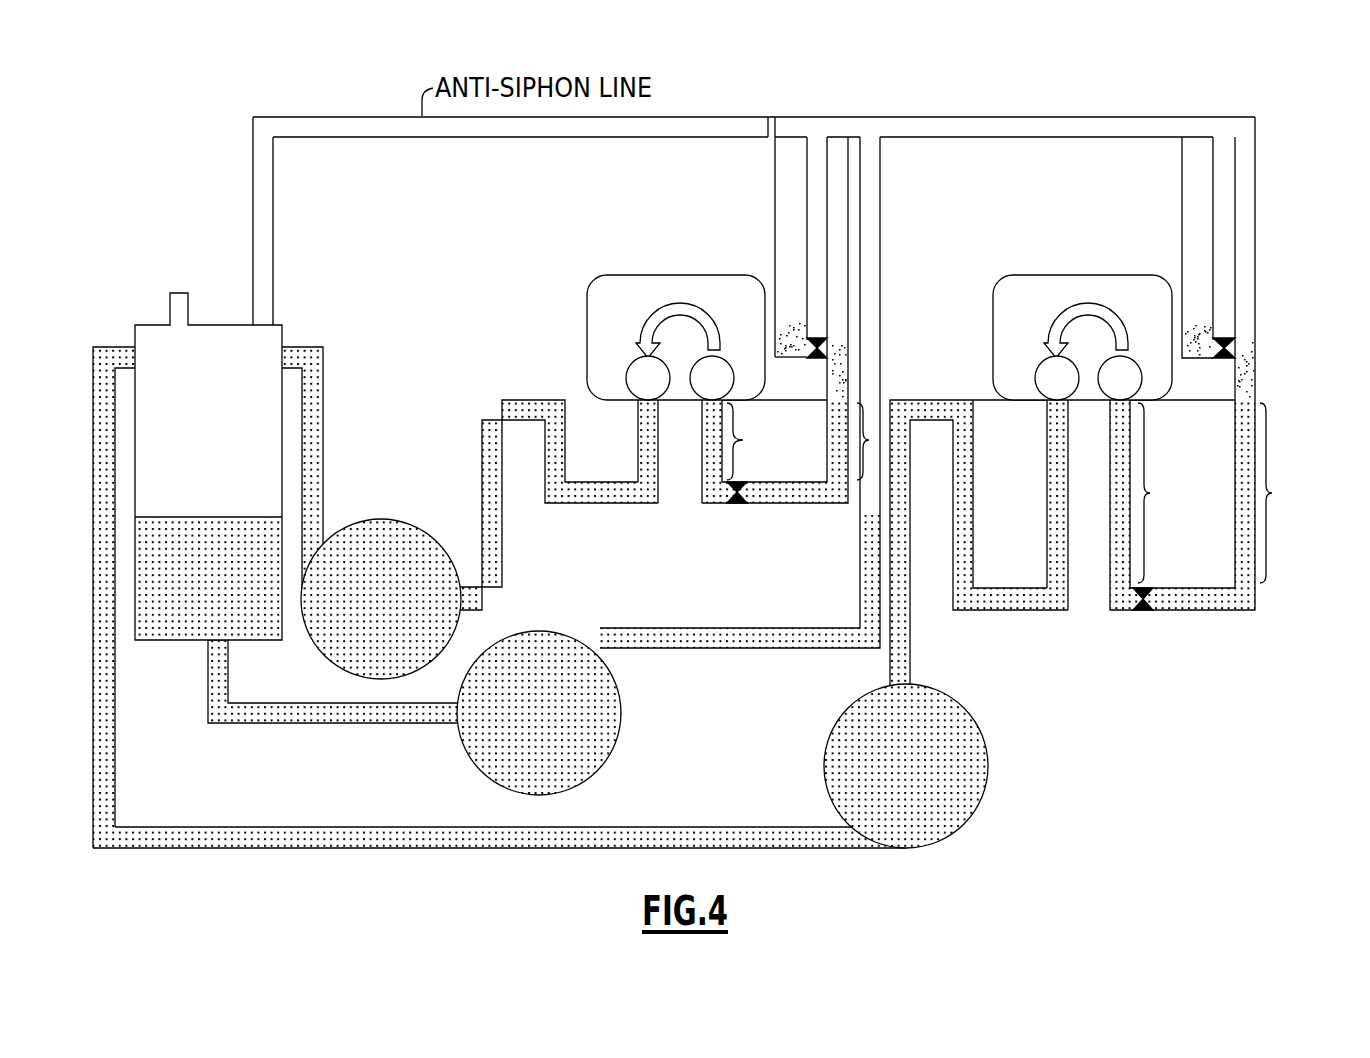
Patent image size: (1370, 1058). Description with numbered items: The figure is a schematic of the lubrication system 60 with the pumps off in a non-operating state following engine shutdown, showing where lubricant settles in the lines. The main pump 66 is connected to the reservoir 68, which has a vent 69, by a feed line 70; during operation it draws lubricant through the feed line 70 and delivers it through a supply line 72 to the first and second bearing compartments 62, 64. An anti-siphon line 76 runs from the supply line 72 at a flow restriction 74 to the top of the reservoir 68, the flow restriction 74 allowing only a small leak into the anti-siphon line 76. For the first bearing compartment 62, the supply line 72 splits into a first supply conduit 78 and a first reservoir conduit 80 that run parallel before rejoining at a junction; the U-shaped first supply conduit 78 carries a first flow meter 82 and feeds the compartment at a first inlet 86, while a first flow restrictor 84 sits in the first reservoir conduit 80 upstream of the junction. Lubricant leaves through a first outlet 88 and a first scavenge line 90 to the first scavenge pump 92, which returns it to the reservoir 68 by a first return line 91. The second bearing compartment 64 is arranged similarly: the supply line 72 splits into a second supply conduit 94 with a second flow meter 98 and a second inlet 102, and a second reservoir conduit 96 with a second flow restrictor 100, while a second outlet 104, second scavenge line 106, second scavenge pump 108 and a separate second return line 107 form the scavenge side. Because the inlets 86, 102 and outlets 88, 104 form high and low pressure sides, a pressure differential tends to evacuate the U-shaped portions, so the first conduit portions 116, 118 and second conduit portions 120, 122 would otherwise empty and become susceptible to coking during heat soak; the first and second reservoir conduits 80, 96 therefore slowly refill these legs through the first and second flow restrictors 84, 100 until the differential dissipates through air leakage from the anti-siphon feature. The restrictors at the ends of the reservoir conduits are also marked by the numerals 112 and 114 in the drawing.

The lubrication system 60 is at (695, 87).
The first bearing compartment 62 is at (603, 278).
The second bearing compartment 64 is at (1010, 278).
The main pump 66 is at (610, 701).
The reservoir 68 is at (271, 335).
The vent 69 is at (177, 297).
The feed line 70 is at (283, 722).
The supply line 72 is at (873, 277).
The flow restriction 74 is at (776, 118).
The anti-siphon line 76 is at (668, 127).
The first supply conduit 78 is at (837, 447).
The first reservoir conduit 80 is at (777, 250).
The first flow meter 82 is at (742, 497).
The first flow restrictor 84 is at (813, 360).
The first inlet 86 is at (708, 400).
The first outlet 88 is at (640, 398).
The first scavenge line 90 is at (595, 494).
The first return line 91 is at (318, 397).
The first scavenge pump 92 is at (389, 517).
The second supply conduit 94 is at (1240, 527).
The second reservoir conduit 96 is at (1184, 250).
The second flow meter 98 is at (1152, 610).
The second flow restrictor 100 is at (1221, 360).
The second inlet 102 is at (1122, 405).
The second outlet 104 is at (1047, 420).
The second scavenge line 106 is at (1001, 612).
The second return line 107 is at (613, 837).
The second scavenge pump 108 is at (952, 710).
The check valve 112 is at (829, 346).
The check valve 114 is at (1235, 346).
The first conduit portion 116 is at (745, 440).
The first conduit portion 118 is at (878, 442).
The second conduit portion 120 is at (1151, 493).
The second conduit portion 122 is at (1273, 493).